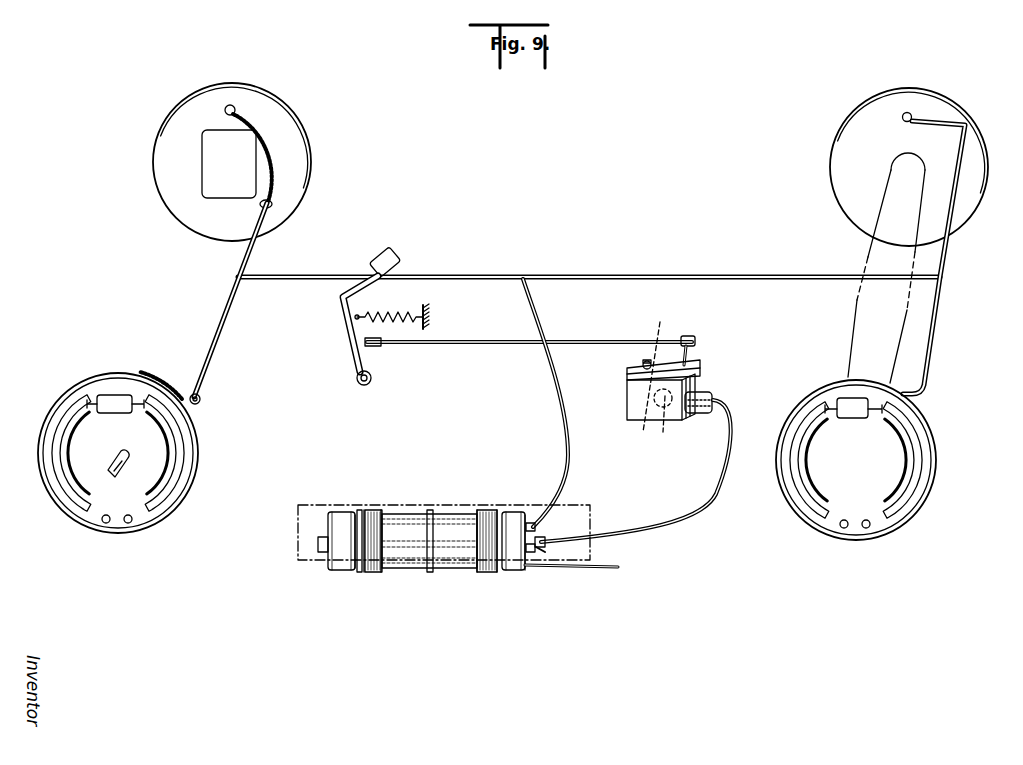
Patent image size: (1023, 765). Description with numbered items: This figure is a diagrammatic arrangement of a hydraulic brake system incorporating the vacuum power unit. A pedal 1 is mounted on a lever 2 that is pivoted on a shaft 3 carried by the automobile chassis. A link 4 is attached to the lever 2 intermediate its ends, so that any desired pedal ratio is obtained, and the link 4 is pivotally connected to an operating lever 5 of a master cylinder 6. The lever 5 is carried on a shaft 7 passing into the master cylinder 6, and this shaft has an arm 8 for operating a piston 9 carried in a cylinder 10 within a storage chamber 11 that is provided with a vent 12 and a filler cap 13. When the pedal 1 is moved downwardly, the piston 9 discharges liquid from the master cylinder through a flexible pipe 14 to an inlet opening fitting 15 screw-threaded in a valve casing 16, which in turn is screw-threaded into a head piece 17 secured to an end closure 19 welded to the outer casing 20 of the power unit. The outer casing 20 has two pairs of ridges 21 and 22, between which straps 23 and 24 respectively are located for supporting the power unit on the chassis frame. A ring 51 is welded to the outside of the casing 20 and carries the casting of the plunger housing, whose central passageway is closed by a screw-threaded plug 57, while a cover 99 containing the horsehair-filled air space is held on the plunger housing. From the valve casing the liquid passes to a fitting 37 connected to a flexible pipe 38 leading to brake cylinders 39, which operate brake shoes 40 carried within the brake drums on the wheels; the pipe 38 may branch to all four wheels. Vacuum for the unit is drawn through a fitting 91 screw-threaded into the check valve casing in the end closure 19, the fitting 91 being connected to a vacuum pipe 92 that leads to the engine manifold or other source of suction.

The pedal 1 is at (396, 257).
The lever 2 is at (343, 306).
The shaft 3 is at (358, 385).
The link 4 is at (491, 344).
The operating lever 5 is at (690, 346).
The master cylinder 6 is at (628, 402).
The shaft 7 is at (651, 371).
The arm 8 is at (642, 426).
The piston 9 is at (657, 422).
The cylinder 10 is at (697, 414).
The storage chamber 11 is at (625, 383).
The vent 12 is at (697, 365).
The filler cap 13 is at (640, 364).
The flexible pipe 14 is at (707, 488).
The inlet opening fitting 15 is at (547, 551).
The valve casing 16 is at (547, 542).
The head piece 17 is at (537, 553).
The end closure 19 is at (512, 510).
The outer casing 20 is at (412, 520).
The ridges 21 is at (381, 573).
The ridges 22 is at (496, 573).
The strap 23 is at (370, 515).
The strap 24 is at (490, 515).
The fitting 37 is at (530, 523).
The flexible pipe 38 is at (555, 398).
The brake cylinders 39 is at (112, 402).
The brake shoes 40 is at (53, 434).
The ring 51 is at (355, 570).
The screw-threaded plug 57 is at (320, 545).
The fitting 91 is at (527, 572).
The vacuum pipe 92 is at (612, 569).
The cover 99 is at (338, 518).